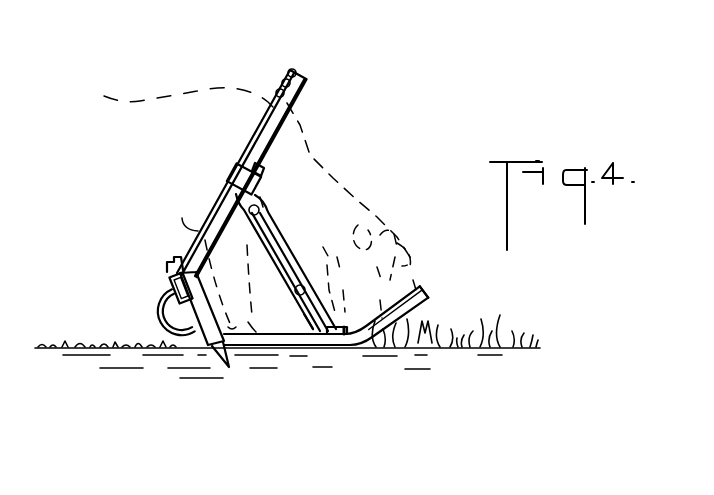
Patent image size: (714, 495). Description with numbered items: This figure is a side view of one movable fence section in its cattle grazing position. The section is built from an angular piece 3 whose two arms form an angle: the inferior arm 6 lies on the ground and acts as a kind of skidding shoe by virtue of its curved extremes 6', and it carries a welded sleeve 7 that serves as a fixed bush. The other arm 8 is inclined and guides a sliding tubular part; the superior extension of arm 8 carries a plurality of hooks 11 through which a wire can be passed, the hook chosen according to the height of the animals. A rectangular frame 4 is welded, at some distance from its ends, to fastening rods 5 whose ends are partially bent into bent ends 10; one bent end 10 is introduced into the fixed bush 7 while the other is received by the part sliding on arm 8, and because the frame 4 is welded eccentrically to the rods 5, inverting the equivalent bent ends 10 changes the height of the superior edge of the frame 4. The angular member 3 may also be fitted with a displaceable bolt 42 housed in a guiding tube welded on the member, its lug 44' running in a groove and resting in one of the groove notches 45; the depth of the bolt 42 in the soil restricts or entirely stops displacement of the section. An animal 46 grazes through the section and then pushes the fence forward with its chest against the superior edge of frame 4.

The angular piece 3 is at (268, 358).
The rectangular frame 4 is at (297, 238).
The fastening rod 5 is at (302, 315).
The inferior arm 6 is at (326, 354).
The curved extremes 6' is at (287, 304).
The welded sleeve 7 is at (309, 284).
The inclined arm 8 is at (289, 108).
The bent end 10 is at (348, 335).
The hooks 11 is at (276, 90).
The displaceable bolt 42 is at (167, 262).
The collar 44' is at (211, 232).
The groove notches 45 is at (172, 304).
The animals 46 is at (356, 179).